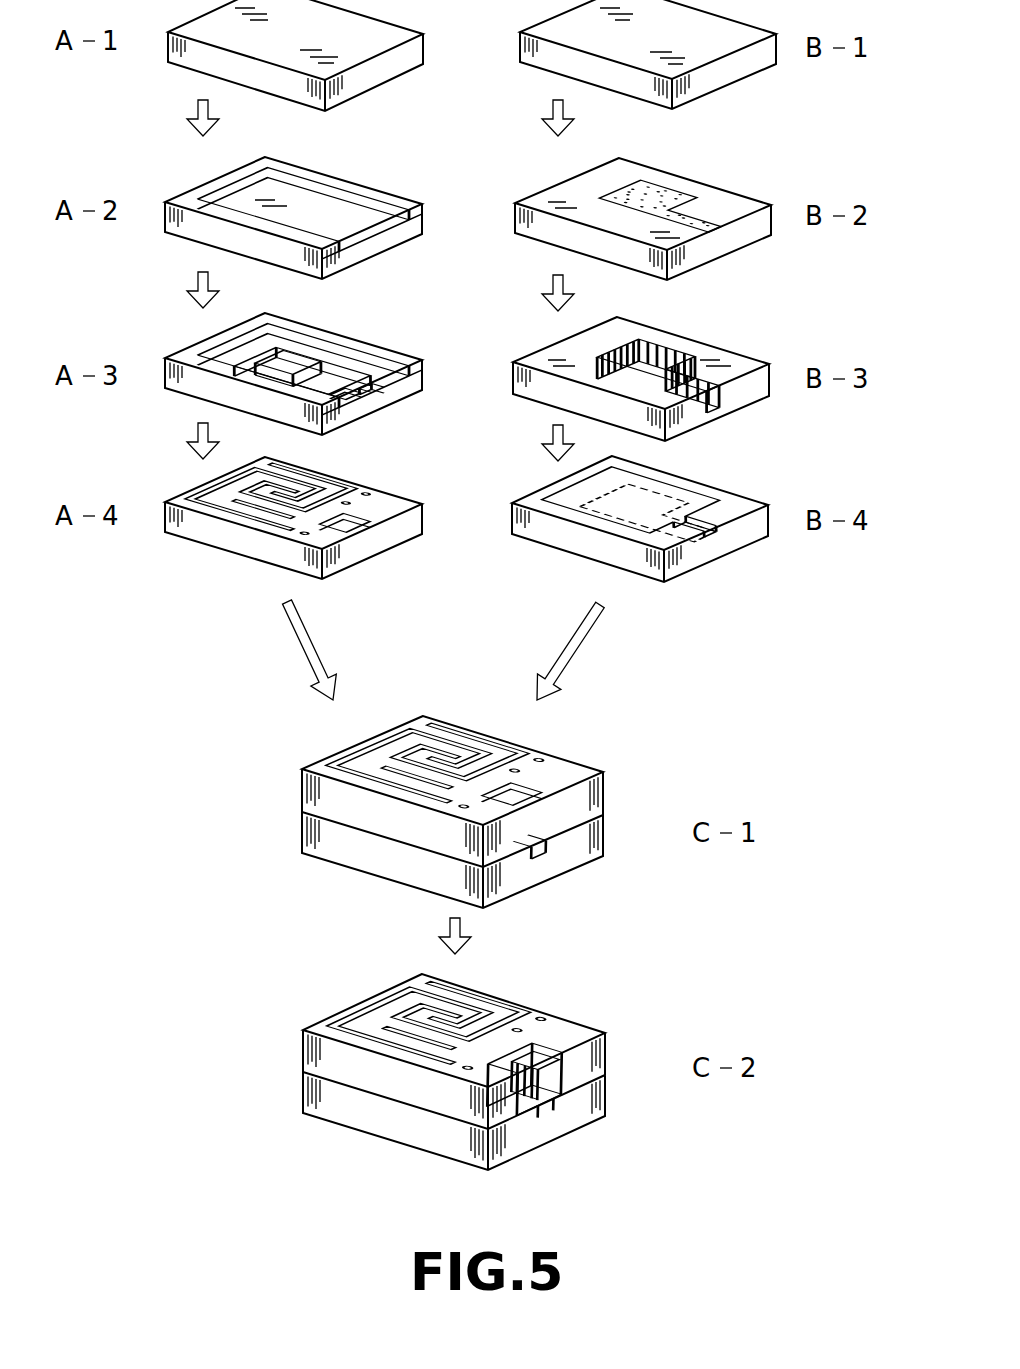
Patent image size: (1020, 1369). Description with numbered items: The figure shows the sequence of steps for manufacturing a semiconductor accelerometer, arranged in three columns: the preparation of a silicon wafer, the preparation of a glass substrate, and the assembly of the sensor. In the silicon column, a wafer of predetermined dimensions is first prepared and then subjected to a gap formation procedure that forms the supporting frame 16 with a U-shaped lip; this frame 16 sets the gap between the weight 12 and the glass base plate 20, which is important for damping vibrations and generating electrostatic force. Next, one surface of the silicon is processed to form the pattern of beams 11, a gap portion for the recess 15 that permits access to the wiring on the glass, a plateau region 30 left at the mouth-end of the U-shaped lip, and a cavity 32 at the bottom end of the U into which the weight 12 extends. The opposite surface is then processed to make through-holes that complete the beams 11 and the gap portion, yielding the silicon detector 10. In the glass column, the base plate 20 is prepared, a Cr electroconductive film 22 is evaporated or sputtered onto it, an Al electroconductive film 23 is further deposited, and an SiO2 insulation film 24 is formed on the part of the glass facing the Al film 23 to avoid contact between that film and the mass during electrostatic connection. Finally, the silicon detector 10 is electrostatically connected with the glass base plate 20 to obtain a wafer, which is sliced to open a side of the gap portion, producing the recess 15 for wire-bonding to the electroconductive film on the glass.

The silicon detector 10 is at (597, 793).
The beams 11 is at (303, 472).
The weight 12 is at (292, 350).
The recess 15 is at (364, 380).
The supporting frame 16 is at (383, 204).
The base plate 20 is at (537, 870).
The Cr electroconductive film 22 is at (650, 192).
The Al electroconductive film 23 is at (660, 353).
The SiO2 insulation film 24 is at (687, 500).
The plateau region 30 is at (410, 362).
The cavity 32 is at (322, 368).